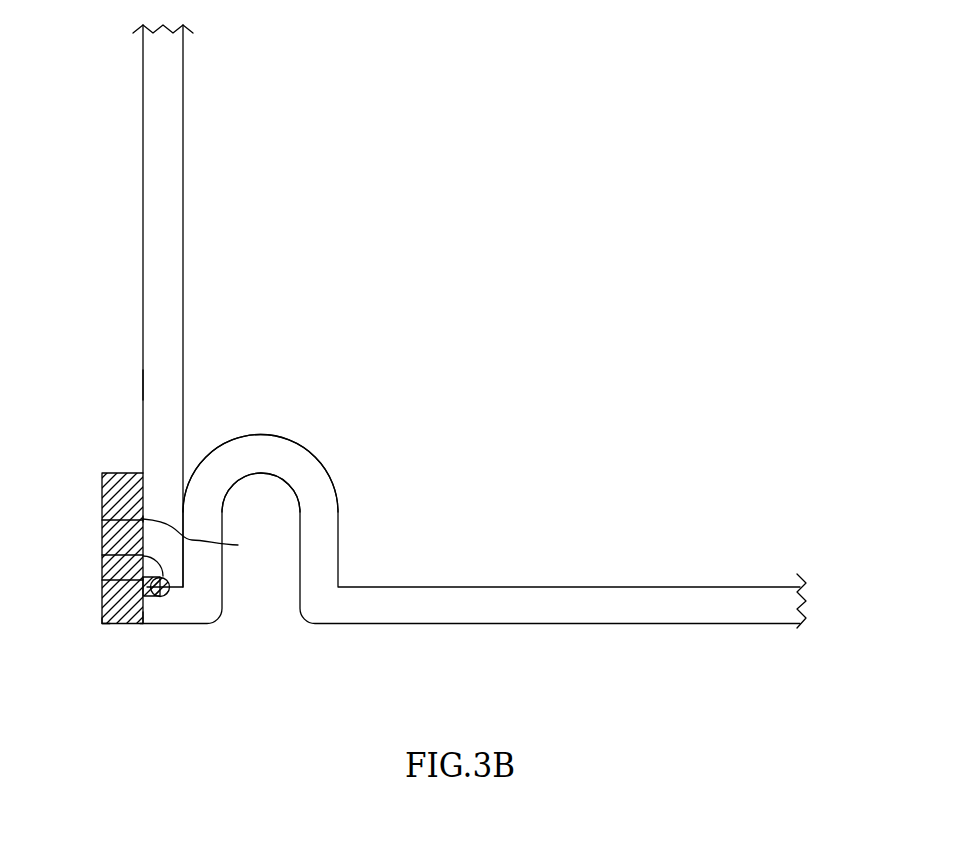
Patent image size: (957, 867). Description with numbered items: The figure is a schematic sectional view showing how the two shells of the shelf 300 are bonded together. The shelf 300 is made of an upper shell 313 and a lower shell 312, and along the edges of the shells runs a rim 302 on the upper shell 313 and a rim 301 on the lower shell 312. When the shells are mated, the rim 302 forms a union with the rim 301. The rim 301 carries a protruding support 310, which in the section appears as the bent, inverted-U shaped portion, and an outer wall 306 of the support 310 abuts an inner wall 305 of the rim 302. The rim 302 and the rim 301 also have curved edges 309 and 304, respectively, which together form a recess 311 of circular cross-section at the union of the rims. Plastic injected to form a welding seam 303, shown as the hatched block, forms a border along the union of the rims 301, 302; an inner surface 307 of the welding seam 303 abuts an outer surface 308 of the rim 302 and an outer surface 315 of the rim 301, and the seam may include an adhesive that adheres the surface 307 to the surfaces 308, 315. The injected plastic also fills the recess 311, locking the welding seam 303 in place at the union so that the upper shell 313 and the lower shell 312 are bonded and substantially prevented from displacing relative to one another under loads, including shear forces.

The shelf 300 is at (792, 145).
The rim of lower shell 301 is at (375, 595).
The rim of upper shell 302 is at (168, 375).
The welding seam 303 is at (143, 578).
The curved edge of rim 301 304 is at (158, 597).
The inner wall of rim 302 305 is at (143, 519).
The outer wall of support 306 is at (212, 539).
The inner surface of welding seam 307 is at (131, 488).
The outer surface of rim 302 308 is at (144, 385).
The curved edge of rim 302 309 is at (143, 555).
The protruding support 310 is at (271, 446).
The recess 311 is at (106, 624).
The lower shell 312 is at (573, 647).
The upper shell 313 is at (93, 310).
The outer surface of rim 301 315 is at (147, 612).